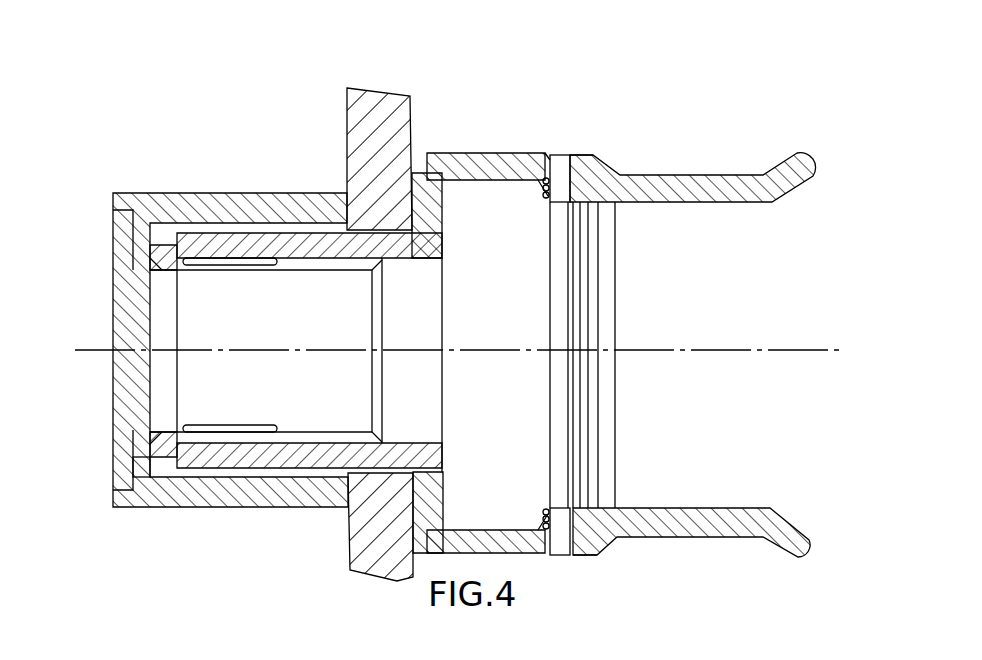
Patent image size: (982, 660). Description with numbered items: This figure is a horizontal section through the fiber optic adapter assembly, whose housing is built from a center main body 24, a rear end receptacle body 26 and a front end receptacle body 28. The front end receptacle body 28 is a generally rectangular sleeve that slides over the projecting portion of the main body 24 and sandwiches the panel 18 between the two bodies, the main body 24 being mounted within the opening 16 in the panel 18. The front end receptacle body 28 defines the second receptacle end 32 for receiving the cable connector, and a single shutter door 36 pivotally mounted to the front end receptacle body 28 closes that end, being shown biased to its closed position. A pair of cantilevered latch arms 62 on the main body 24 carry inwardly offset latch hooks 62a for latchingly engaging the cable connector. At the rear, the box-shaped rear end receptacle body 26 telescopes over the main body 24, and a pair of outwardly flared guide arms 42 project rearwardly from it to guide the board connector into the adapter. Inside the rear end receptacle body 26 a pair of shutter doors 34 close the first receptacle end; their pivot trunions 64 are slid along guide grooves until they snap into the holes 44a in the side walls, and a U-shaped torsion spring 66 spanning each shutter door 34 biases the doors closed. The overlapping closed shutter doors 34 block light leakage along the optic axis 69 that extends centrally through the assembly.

The opening 16 is at (344, 236).
The panel 18 is at (396, 114).
The main body 24 is at (321, 470).
The rear end receptacle body 26 is at (530, 143).
The front end receptacle body 28 is at (272, 182).
The second receptacle end 32 is at (138, 462).
The shutter doors 34 is at (558, 303).
The shutter door 36 is at (136, 385).
The guide arms 42 is at (722, 184).
The hole 44a is at (570, 157).
The latch arms 62 is at (230, 245).
The latch hooks 62a is at (162, 250).
The pivot trunions 64 is at (557, 192).
The U-shaped torsion spring 66 is at (551, 158).
The optic axis 69 is at (697, 350).